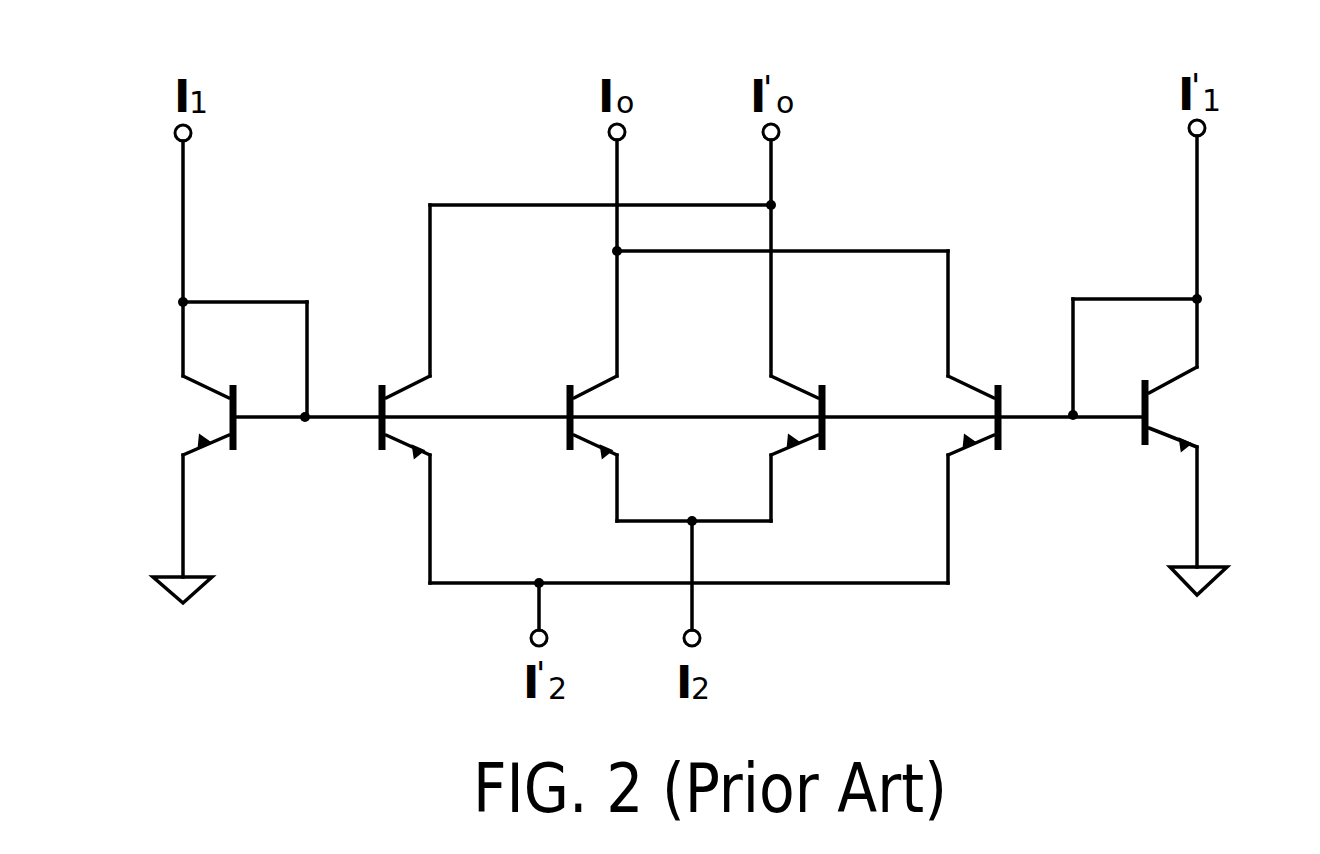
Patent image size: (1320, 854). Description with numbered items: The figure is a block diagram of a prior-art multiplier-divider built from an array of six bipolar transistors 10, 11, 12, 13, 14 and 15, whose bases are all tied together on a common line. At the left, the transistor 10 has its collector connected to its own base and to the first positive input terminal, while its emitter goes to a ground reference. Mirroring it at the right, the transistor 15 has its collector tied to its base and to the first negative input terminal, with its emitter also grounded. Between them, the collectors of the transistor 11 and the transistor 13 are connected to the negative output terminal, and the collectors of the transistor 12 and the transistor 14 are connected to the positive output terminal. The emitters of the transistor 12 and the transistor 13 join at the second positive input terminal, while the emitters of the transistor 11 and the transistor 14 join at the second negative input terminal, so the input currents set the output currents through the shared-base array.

The transistor 10 is at (192, 414).
The transistor 11 is at (385, 463).
The transistor 12 is at (585, 463).
The transistor 13 is at (815, 463).
The transistor 14 is at (995, 463).
The transistor 15 is at (1193, 408).